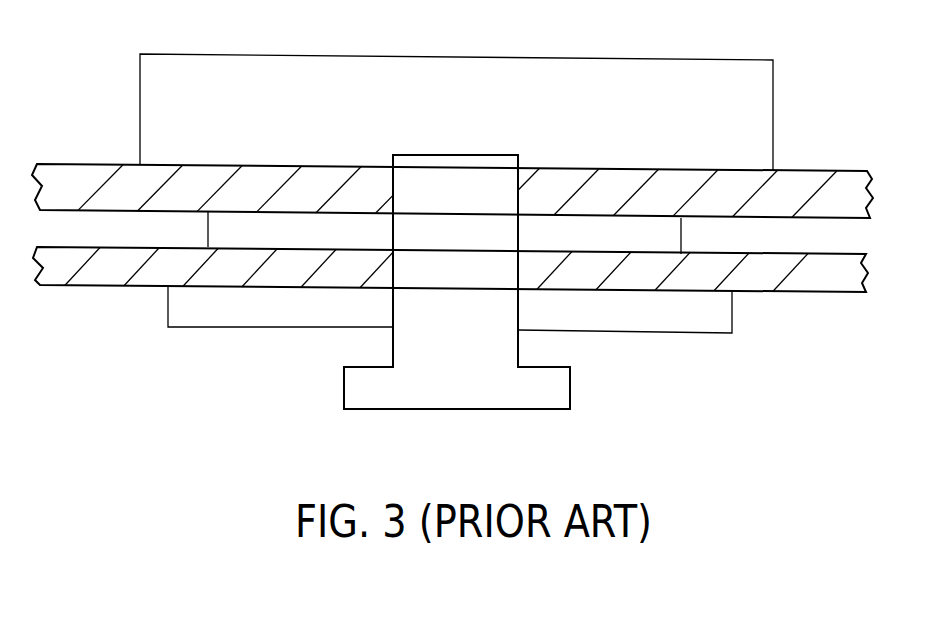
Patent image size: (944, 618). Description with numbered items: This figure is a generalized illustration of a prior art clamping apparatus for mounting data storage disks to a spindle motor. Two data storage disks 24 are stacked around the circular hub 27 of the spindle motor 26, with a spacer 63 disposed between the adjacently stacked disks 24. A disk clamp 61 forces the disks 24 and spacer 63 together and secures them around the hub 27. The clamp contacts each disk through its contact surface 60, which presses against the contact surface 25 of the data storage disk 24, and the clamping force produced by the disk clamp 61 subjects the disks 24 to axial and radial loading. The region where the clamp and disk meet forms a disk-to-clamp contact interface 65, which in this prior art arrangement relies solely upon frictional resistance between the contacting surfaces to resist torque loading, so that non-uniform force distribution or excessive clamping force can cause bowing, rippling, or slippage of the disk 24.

The data storage disk 24 is at (841, 176).
The contact surface of the data storage disk 25 is at (746, 182).
The spindle motor 26 is at (461, 285).
The circular hub 27 is at (518, 232).
The contact surface of the disk clamp 60 is at (203, 158).
The disk clamp 61 is at (688, 66).
The spacer 63 is at (682, 234).
The disk-to-clamp contact interface 65 is at (195, 218).